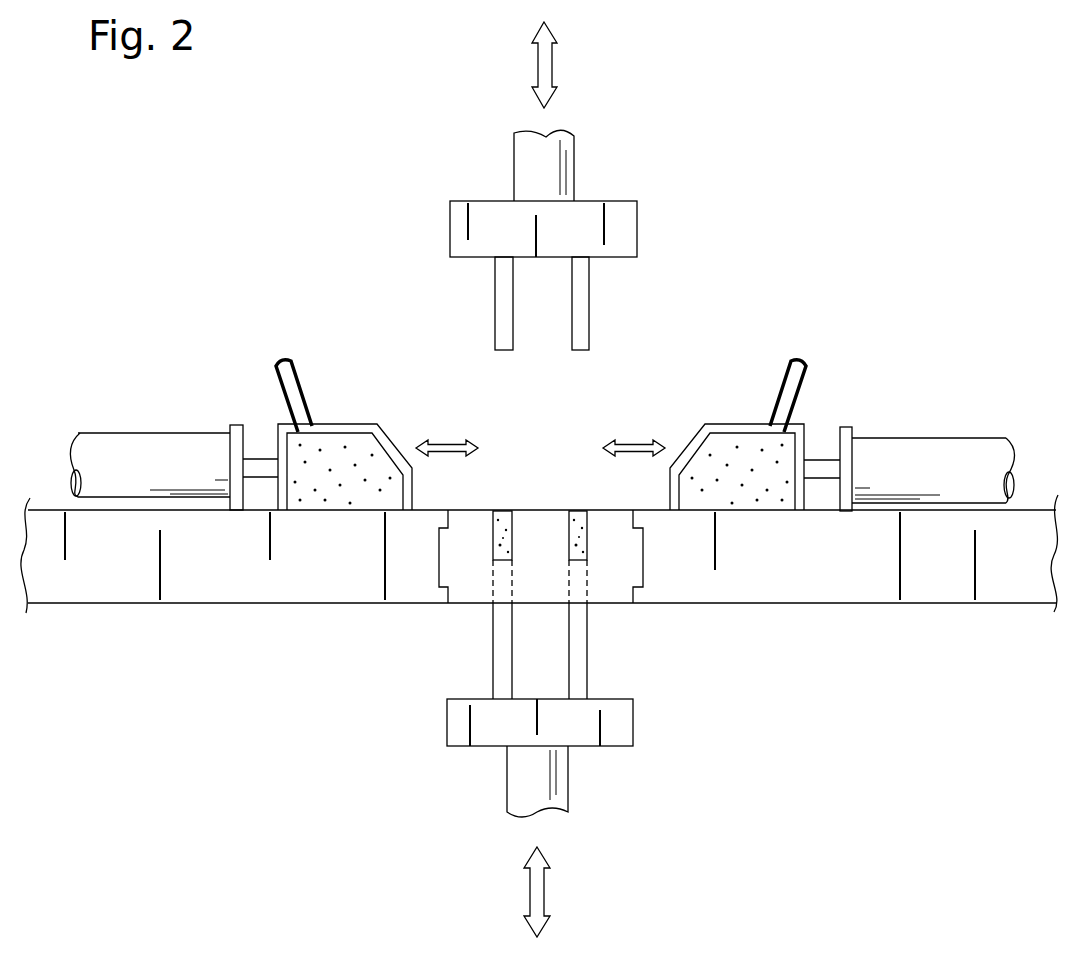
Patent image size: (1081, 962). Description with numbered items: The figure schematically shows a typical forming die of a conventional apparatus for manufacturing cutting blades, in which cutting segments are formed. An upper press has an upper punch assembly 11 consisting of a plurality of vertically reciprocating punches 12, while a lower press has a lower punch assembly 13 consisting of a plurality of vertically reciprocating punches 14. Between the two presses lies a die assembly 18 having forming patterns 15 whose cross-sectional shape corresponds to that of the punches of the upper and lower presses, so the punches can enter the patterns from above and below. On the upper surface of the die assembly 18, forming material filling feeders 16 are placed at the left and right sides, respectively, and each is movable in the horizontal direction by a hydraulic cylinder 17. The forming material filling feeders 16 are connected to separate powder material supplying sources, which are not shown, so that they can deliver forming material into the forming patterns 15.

The upper punch assembly 11 is at (630, 227).
The vertically reciprocating punches 12 is at (585, 318).
The lower punch assembly 13 is at (625, 727).
The vertically reciprocating punches 14 is at (583, 662).
The forming patterns 15 is at (583, 510).
The forming material filling feeders 16 is at (345, 425).
The hydraulic cylinders 17 is at (128, 442).
The die assembly 18 is at (310, 595).